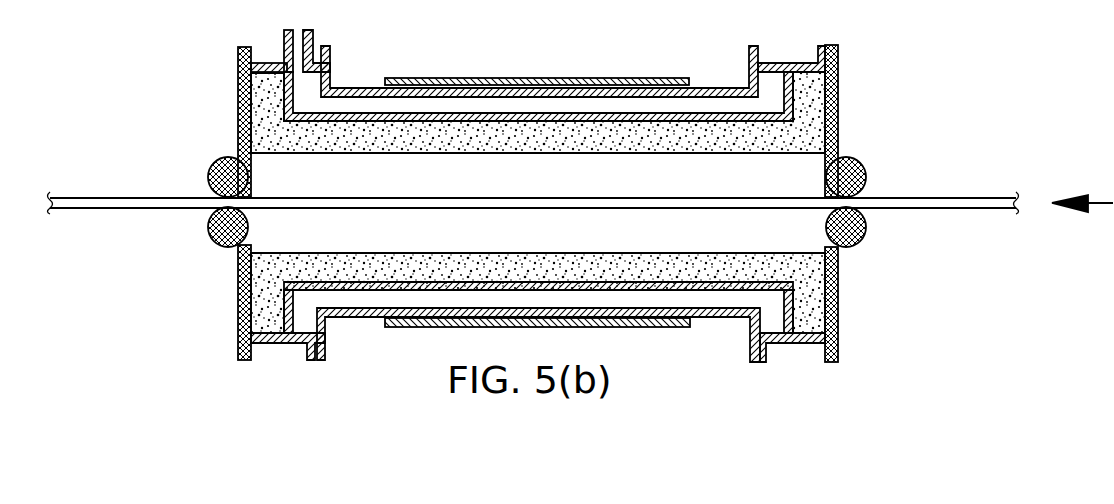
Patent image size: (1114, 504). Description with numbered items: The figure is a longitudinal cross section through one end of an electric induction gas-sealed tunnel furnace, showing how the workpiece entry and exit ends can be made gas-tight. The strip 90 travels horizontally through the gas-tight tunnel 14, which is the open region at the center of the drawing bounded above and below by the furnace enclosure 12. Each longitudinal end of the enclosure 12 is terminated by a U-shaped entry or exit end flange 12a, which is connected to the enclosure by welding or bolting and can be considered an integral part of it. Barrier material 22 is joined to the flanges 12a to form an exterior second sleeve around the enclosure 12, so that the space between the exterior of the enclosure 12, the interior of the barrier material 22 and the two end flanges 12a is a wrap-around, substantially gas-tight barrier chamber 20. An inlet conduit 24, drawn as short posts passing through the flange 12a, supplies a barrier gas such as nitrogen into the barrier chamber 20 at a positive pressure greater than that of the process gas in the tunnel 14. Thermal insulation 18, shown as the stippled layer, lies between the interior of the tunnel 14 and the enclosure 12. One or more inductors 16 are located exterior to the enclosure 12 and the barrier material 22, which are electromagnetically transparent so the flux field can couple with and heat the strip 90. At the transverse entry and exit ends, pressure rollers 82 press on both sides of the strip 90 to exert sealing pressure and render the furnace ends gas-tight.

The furnace enclosure 12 is at (743, 120).
The entry and exit end flanges 12a is at (273, 62).
The gas-tight tunnel 14 is at (446, 182).
The inductor 16 is at (457, 82).
The thermal insulation 18 is at (307, 142).
The barrier chamber 20 is at (783, 87).
The barrier material 22 is at (721, 90).
The inlet conduit 24 is at (286, 46).
The pressure rollers 82 is at (208, 178).
The strip 90 is at (83, 203).